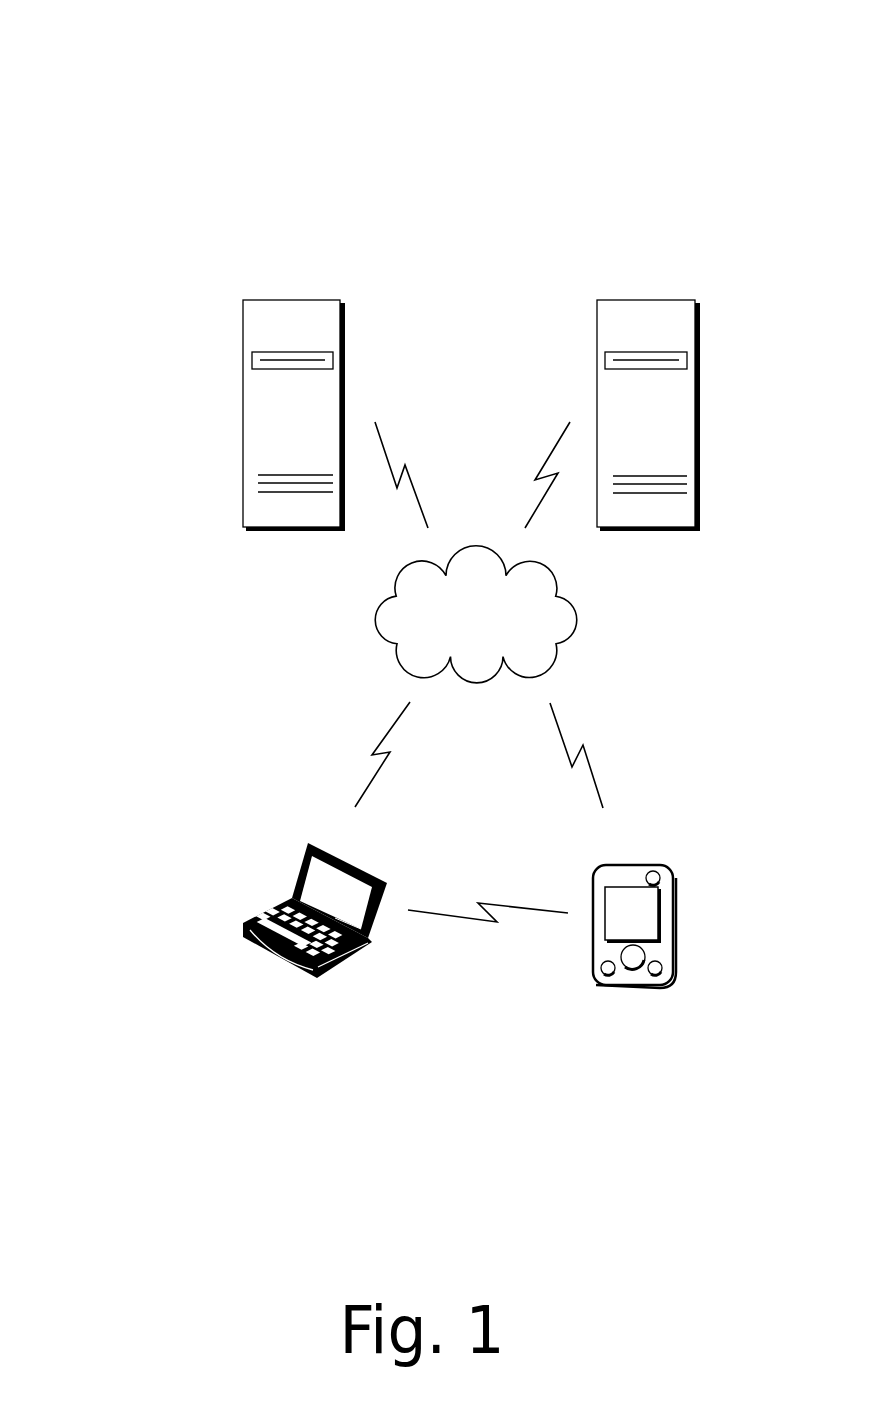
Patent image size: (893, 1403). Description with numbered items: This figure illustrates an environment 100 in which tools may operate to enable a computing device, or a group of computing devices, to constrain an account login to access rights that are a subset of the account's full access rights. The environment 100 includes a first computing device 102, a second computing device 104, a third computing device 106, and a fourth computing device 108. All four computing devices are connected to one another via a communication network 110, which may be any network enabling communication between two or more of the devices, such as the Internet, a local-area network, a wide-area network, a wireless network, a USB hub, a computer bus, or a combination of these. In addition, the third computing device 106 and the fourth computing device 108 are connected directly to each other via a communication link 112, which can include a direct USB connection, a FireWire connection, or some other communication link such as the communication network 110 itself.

The environment 100 is at (155, 44).
The first computing device 102 is at (290, 300).
The second computing device 104 is at (647, 300).
The third computing device 106 is at (311, 842).
The fourth computing device 108 is at (640, 864).
The communication network 110 is at (503, 628).
The communication link 112 is at (507, 955).